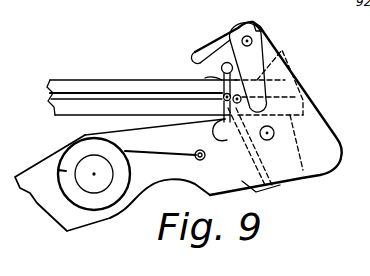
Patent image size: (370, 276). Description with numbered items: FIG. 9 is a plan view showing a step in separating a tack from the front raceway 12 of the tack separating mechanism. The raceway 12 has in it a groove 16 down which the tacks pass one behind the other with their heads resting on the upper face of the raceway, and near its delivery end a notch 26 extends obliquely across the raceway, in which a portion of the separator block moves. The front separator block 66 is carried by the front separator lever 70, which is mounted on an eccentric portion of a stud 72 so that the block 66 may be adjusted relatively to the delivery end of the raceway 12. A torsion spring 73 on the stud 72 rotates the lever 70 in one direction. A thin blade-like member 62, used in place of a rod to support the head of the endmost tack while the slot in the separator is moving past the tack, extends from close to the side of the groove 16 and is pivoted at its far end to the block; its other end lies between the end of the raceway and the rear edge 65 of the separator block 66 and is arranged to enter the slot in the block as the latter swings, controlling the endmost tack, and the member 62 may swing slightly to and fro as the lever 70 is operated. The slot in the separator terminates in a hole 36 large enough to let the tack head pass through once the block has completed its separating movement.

The front raceway 12 is at (157, 83).
The groove 16 is at (84, 97).
The notch 26 is at (205, 78).
The hole 36 is at (282, 55).
The blade-like member 62 is at (215, 125).
The rear edge 65 is at (199, 57).
The front separator block 66 is at (262, 27).
The front separator lever 70 is at (247, 176).
The stud 72 is at (97, 181).
The torsion spring 73 is at (157, 156).